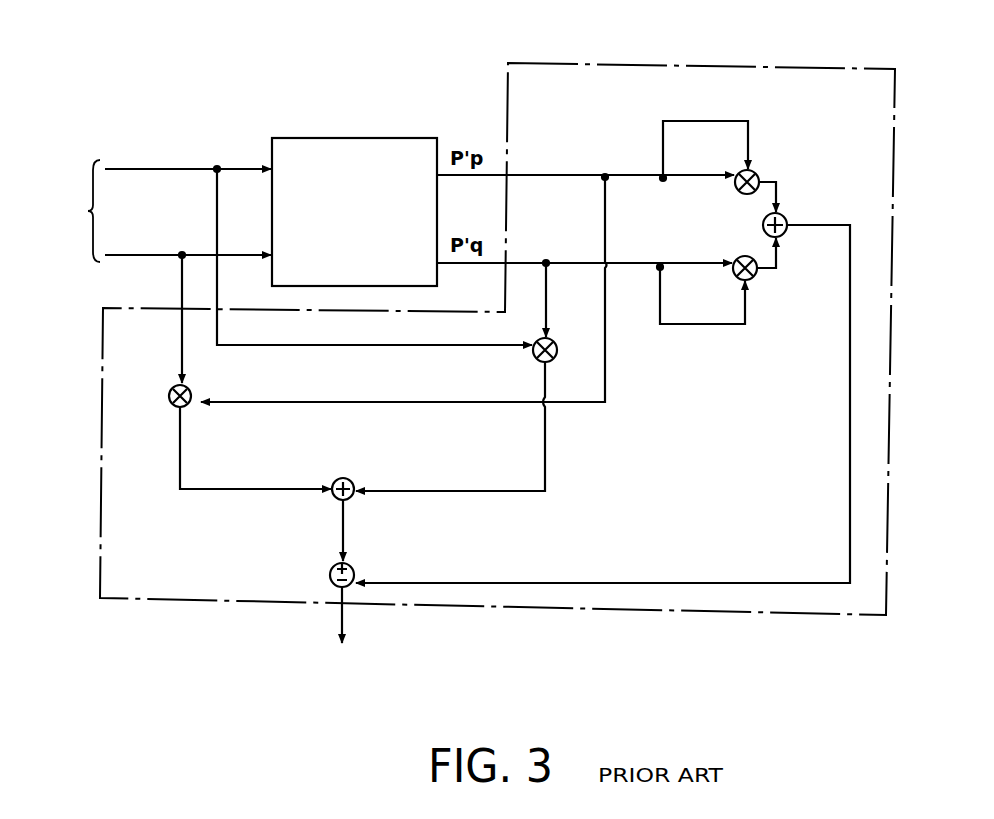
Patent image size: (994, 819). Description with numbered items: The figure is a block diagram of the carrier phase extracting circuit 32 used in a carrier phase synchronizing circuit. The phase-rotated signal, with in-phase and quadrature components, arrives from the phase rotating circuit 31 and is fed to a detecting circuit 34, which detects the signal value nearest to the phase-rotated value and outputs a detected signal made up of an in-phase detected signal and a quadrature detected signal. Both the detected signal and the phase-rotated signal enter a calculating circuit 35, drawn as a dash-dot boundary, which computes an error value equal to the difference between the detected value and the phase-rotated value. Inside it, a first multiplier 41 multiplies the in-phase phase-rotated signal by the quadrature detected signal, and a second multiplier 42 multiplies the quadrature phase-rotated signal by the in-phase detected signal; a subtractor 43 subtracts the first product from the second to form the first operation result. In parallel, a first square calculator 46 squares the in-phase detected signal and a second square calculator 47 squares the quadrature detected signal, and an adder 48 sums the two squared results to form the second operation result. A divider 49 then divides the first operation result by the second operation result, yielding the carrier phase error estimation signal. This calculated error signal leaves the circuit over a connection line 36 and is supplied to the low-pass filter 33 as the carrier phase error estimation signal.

The phase rotating circuit 31 is at (146, 200).
The carrier phase extracting circuit 32 is at (228, 640).
The low-pass filter 33 is at (333, 661).
The detecting circuit 34 is at (360, 138).
The calculating circuit 35 is at (693, 67).
The connection line 36 is at (338, 615).
The first multiplier 41 is at (536, 360).
The second multiplier 42 is at (171, 388).
The subtractor 43 is at (346, 478).
The first square calculator 46 is at (757, 173).
The second square calculator 47 is at (755, 278).
The adder 48 is at (787, 216).
The divider 49 is at (352, 564).